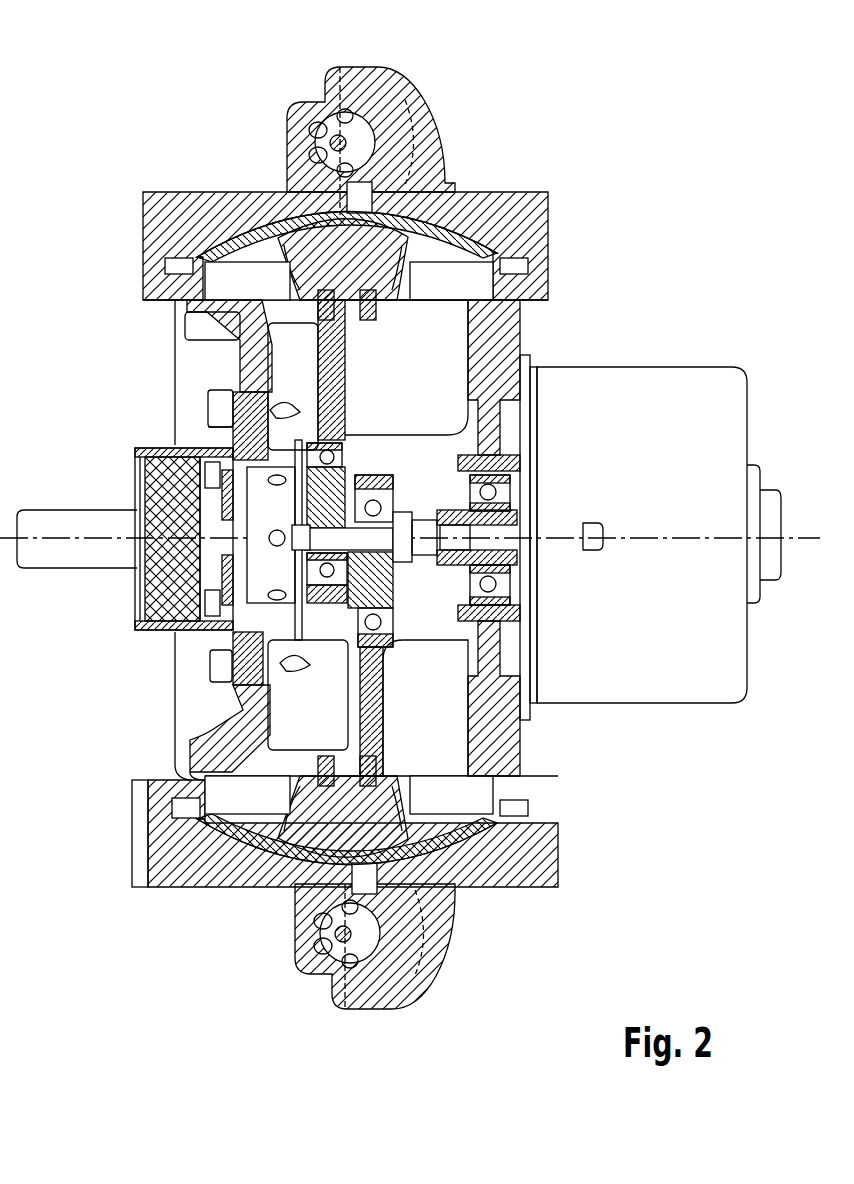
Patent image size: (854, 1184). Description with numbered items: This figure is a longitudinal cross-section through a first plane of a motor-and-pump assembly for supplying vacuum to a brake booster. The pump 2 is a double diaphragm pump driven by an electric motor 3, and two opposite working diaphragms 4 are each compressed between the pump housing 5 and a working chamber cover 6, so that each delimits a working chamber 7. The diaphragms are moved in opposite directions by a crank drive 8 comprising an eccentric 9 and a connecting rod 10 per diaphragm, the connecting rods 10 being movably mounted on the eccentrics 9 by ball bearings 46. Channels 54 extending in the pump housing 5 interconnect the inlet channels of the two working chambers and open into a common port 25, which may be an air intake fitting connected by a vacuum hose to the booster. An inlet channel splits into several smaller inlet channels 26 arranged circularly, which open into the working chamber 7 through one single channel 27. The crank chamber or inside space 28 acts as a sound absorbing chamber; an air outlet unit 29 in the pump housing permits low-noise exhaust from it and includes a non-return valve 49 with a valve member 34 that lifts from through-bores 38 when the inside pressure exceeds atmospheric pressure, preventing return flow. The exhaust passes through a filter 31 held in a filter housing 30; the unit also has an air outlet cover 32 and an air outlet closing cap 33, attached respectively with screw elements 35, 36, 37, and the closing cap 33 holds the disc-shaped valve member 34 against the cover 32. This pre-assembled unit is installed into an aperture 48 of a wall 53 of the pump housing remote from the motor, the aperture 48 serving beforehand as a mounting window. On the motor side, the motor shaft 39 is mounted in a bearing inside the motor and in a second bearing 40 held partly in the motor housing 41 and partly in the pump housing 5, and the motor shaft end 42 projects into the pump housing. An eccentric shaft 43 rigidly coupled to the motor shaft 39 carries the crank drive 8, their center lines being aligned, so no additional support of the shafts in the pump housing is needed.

The pump 2 is at (518, 190).
The electric motor 3 is at (667, 655).
The working diaphragm 4 is at (300, 245).
The pump housing 5 is at (520, 340).
The working chamber cover 6 is at (417, 104).
The working chamber 7 is at (330, 205).
The crank drive 8 is at (355, 450).
The eccentric 9 is at (352, 470).
The connecting rod 10 is at (318, 370).
The port 25 is at (47, 555).
The smaller inlet channels 26 is at (343, 112).
The channel 27 is at (352, 200).
The inside space 28 is at (341, 727).
The air outlet unit 29 is at (125, 612).
The filter housing 30 is at (145, 539).
The filter 31 is at (172, 615).
The air outlet cover 32 is at (217, 432).
The air outlet closing cap 33 is at (140, 465).
The valve member 34 is at (137, 490).
The screw element 35 is at (222, 365).
The screw element 36 is at (232, 645).
The screw element 37 is at (140, 590).
The through-bores 38 is at (250, 518).
The motor shaft 39 is at (520, 522).
The second bearing 40 is at (520, 584).
The motor housing 41 is at (520, 633).
The motor shaft end 42 is at (442, 572).
The eccentric shaft 43 is at (402, 517).
The ball bearings 46 is at (375, 477).
The aperture 48 is at (220, 405).
The non-return valve 49 is at (202, 625).
The wall 53 is at (207, 708).
The channels 54 is at (173, 333).